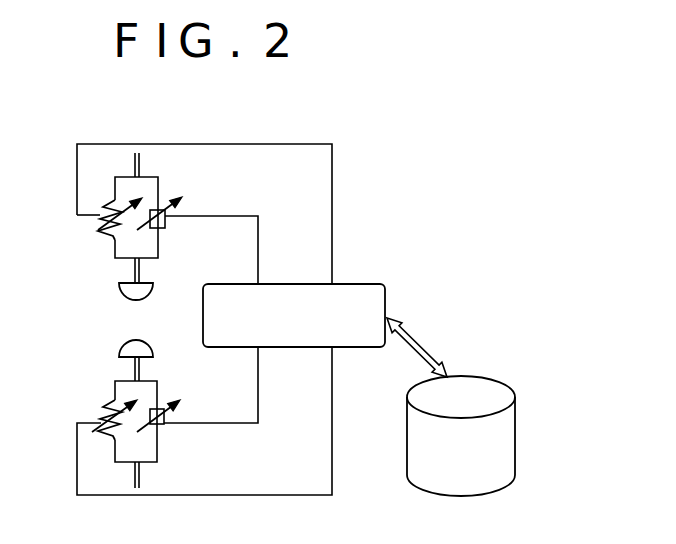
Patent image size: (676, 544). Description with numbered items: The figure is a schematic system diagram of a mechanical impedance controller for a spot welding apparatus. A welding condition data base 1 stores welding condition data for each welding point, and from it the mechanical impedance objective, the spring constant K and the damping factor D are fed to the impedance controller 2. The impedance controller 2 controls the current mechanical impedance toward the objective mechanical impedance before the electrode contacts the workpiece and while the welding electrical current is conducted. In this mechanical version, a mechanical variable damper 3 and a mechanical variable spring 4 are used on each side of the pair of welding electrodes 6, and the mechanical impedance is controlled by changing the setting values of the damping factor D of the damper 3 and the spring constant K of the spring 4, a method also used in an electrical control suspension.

The welding condition data base 1 is at (407, 445).
The impedance controller 2 is at (362, 283).
The mechanical variable damper 3 is at (165, 224).
The mechanical variable spring 4 is at (112, 238).
The welding electrodes 6 is at (155, 298).
The spring constant K is at (132, 200).
The damping factor D is at (175, 193).